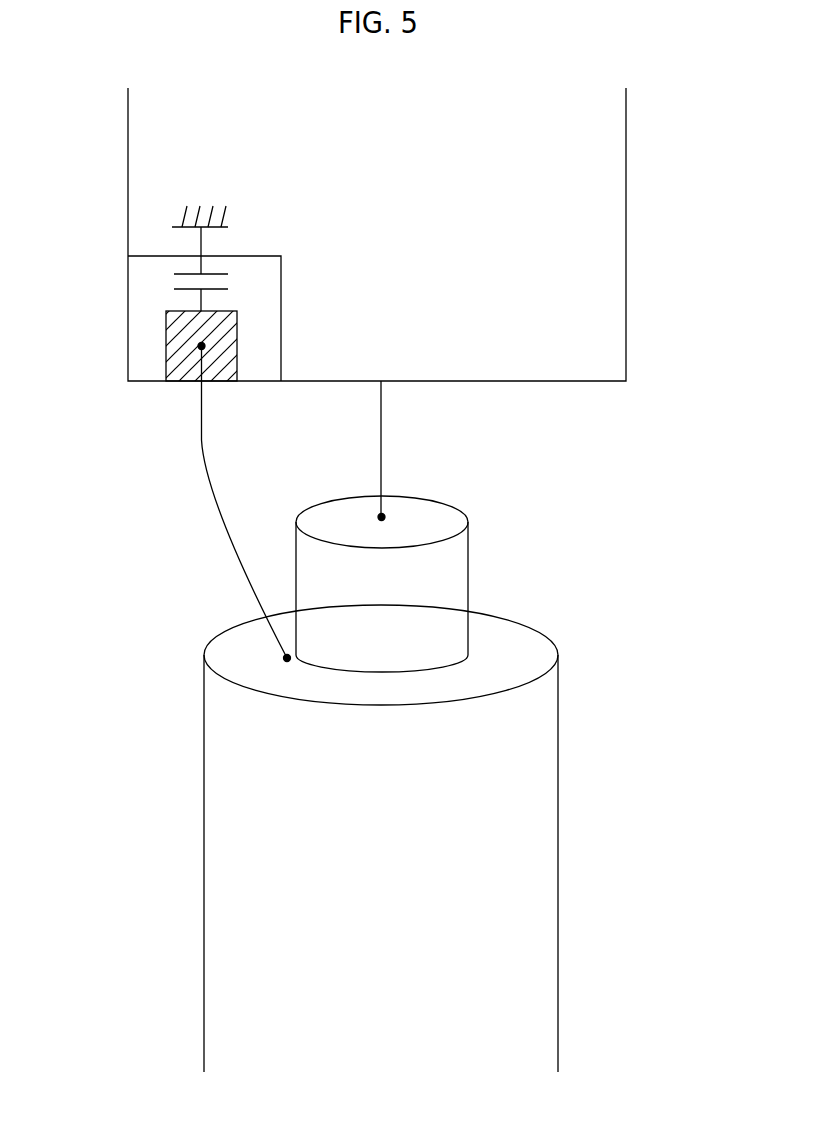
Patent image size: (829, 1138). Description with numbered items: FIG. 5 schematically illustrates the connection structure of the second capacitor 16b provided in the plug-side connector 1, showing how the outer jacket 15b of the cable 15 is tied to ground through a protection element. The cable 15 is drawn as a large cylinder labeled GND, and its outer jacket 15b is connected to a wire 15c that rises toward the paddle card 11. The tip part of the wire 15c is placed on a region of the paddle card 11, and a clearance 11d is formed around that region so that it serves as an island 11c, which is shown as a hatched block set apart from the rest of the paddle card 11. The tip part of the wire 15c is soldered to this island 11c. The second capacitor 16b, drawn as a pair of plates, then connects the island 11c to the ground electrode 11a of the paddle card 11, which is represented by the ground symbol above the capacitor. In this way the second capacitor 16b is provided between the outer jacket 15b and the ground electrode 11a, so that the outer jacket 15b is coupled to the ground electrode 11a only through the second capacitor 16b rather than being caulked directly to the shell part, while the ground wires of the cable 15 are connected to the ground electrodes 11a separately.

The electronic apparatus 1 is at (703, 116).
The paddle card 11 is at (590, 210).
The ground electrode 11a is at (218, 230).
The island 11c is at (178, 352).
The clearance 11d is at (147, 332).
The cable 15 is at (574, 640).
The outer jacket 15b is at (517, 642).
The wire 15c is at (208, 447).
The second capacitor 16b is at (183, 273).